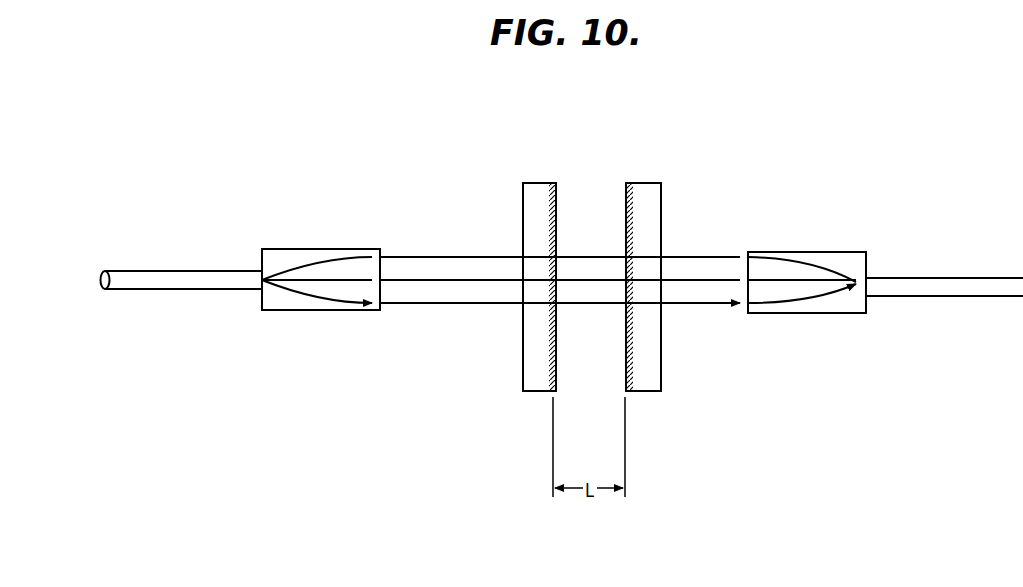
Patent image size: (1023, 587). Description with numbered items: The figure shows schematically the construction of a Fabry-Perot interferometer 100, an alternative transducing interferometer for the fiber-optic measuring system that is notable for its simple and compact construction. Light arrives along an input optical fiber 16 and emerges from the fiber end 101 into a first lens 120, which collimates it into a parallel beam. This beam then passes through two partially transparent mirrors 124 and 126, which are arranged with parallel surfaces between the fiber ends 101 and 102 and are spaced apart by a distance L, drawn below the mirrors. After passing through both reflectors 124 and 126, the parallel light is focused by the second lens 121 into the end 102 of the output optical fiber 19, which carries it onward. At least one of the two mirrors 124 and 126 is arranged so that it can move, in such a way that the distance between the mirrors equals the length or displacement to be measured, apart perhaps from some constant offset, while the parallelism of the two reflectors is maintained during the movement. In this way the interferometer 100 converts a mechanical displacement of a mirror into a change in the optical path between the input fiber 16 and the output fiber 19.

The Fabry-Perot interferometer 100 is at (466, 153).
The input optical fiber 16 is at (118, 272).
The fiber end 101 is at (256, 299).
The lens 120 is at (316, 250).
The partially transparent mirror 124 is at (558, 207).
The partially transparent mirror 126 is at (627, 203).
The second lens 121 is at (806, 260).
The output optical fiber 19 is at (994, 278).
The fiber end 102 is at (870, 299).